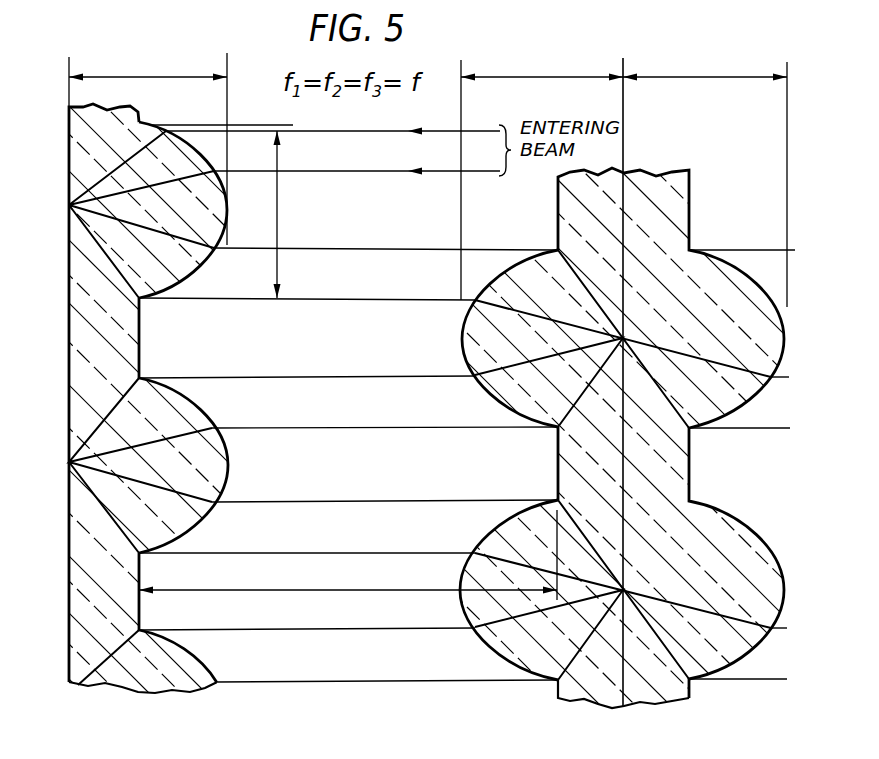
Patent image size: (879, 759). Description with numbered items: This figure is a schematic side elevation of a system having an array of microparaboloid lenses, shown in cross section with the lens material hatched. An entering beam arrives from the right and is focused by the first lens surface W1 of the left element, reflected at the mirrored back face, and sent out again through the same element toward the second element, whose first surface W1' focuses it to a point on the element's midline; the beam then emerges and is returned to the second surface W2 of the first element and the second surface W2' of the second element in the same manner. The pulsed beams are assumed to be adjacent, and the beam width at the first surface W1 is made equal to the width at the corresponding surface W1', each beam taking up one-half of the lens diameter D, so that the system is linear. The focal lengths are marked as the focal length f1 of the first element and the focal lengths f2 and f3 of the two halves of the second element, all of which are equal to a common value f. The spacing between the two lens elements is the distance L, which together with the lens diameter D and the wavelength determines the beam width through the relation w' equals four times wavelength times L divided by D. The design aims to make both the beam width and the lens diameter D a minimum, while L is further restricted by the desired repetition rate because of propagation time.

The focal length of the first lens f1 is at (148, 143).
The focal length of the second lens f2 is at (542, 171).
The focal length of the third lens f3 is at (705, 174).
The lens diameter D is at (286, 214).
The first beam width W1 is at (191, 210).
The second beam width W2 is at (199, 465).
The first beam width at second lens W1' is at (487, 338).
The second beam width at second lens W2' is at (488, 540).
The lens spacing L is at (348, 555).